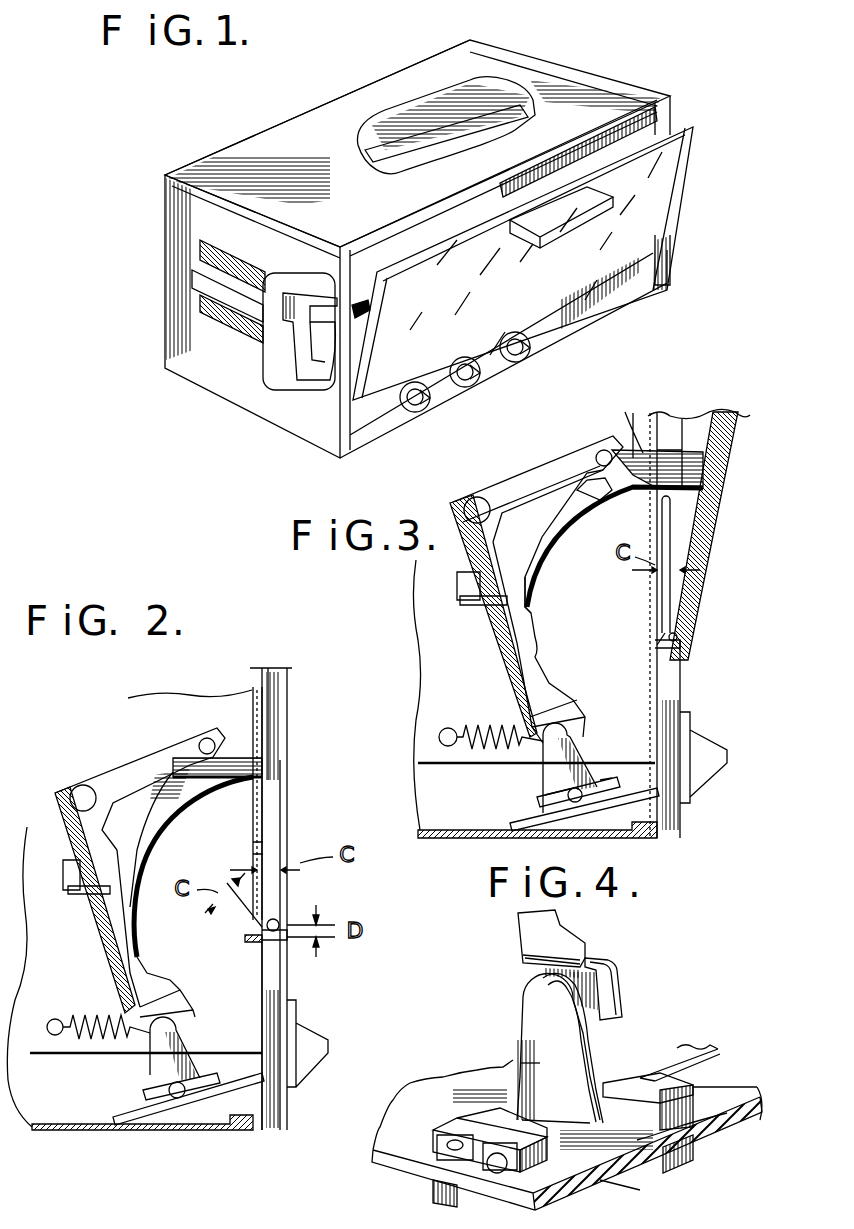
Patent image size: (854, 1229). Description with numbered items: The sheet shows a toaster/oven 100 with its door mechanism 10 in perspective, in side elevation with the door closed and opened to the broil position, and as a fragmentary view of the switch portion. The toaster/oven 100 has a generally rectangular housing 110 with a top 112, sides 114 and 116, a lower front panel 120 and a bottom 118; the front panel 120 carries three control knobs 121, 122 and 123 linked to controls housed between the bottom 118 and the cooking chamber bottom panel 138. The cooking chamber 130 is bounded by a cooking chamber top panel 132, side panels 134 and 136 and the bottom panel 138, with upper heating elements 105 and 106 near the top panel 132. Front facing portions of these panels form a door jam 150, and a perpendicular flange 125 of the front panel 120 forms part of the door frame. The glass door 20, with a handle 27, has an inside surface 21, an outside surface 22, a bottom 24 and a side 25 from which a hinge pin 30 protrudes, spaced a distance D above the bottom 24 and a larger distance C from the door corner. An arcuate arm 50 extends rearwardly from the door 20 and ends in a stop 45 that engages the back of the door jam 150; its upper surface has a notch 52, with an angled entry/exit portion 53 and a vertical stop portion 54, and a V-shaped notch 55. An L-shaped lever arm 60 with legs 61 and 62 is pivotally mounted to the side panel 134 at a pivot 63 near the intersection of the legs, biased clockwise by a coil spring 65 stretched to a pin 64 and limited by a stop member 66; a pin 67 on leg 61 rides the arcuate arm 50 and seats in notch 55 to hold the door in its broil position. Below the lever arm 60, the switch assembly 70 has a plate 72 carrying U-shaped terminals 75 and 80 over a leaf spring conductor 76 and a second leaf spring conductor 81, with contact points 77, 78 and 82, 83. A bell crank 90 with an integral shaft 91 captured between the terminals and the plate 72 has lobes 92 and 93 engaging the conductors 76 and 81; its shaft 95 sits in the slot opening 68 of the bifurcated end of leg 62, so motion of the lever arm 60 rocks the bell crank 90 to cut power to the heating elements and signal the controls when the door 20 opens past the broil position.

In FIG. 1, the toaster/oven 100 is at (158, 240).
In FIG. 1, the housing 110 is at (228, 152).
In FIG. 1, the top 112 is at (323, 205).
In FIG. 1, the side 114 is at (192, 363).
In FIG. 1, the side 116 is at (573, 68).
In FIG. 1, the lower front panel 120 is at (632, 290).
In FIG. 3, the lower front panel 120 is at (688, 818).
In FIG. 1, the knob 121 is at (426, 406).
In FIG. 1, the knob 122 is at (480, 380).
In FIG. 1, the knob 123 is at (530, 352).
In FIG. 1, the cooking chamber 130 is at (688, 112).
In FIG. 1, the cooking chamber top panel 132 is at (482, 103).
In FIG. 1, the cooking chamber side panel 134 is at (312, 285).
In FIG. 3, the cooking chamber side panel 134 is at (469, 672).
In FIG. 2, the cooking chamber side panel 134 is at (173, 712).
In FIG. 1, the cooking chamber side panel 136 is at (578, 163).
In FIG. 1, the cooking chamber bottom panel 138 is at (421, 242).
In FIG. 1, the upper heating element 105 is at (360, 138).
In FIG. 1, the upper heating element 106 is at (443, 152).
In FIG. 1, the handle 27 is at (586, 218).
In FIG. 1, the door 20 is at (690, 180).
In FIG. 2, the door 20 is at (290, 720).
In FIG. 1, the door mechanism 10 is at (386, 308).
In FIG. 2, the inside surface 21 is at (255, 813).
In FIG. 2, the outside surface 22 is at (290, 818).
In FIG. 2, the bottom 24 is at (290, 940).
In FIG. 2, the side 25 is at (280, 784).
In FIG. 3, the hinge pin 30 is at (680, 637).
In FIG. 2, the hinge pin 30 is at (280, 920).
In FIG. 3, the stop 45 is at (538, 607).
In FIG. 3, the arcuate arm 50 is at (585, 517).
In FIG. 2, the arcuate arm 50 is at (177, 813).
In FIG. 3, the notch 52 is at (633, 450).
In FIG. 3, the angled entry/exit portion 53 is at (630, 490).
In FIG. 3, the vertical stop portion 54 is at (668, 445).
In FIG. 3, the notch 55 is at (588, 470).
In FIG. 2, the notch 55 is at (170, 762).
In FIG. 3, the lever arm 60 is at (493, 477).
In FIG. 2, the lever arm 60 is at (100, 767).
In FIG. 3, the leg 61 is at (548, 471).
In FIG. 3, the leg 62 is at (519, 690).
In FIG. 3, the pivot 63 is at (464, 503).
In FIG. 3, the pin 64 is at (446, 728).
In FIG. 3, the coil spring 65 is at (478, 748).
In FIG. 3, the stop member 66 is at (468, 606).
In FIG. 2, the stop member 66 is at (82, 900).
In FIG. 3, the pin 67 is at (602, 450).
In FIG. 2, the pin 67 is at (200, 742).
In FIG. 3, the plate 72 is at (584, 804).
In FIG. 2, the plate 72 is at (232, 1090).
In FIG. 4, the plate 72 is at (430, 1097).
In FIG. 3, the bottom 118 is at (598, 838).
In FIG. 2, the perpendicular flange 125 is at (261, 941).
In FIG. 2, the door jam 150 is at (258, 847).
In FIG. 4, the switch assembly 70 is at (490, 1015).
In FIG. 4, the U-shaped terminal 75 is at (440, 1125).
In FIG. 4, the flexible leaf spring conductor 76 is at (505, 1122).
In FIG. 4, the contact point 77 is at (447, 1130).
In FIG. 4, the contact point 78 is at (440, 1160).
In FIG. 4, the U-shaped terminal 80 is at (630, 1077).
In FIG. 4, the second leaf spring conductor 81 is at (743, 1077).
In FIG. 4, the contact point 82 is at (695, 1138).
In FIG. 4, the contact point 83 is at (633, 1130).
In FIG. 4, the bell crank 90 is at (533, 1010).
In FIG. 4, the integral shaft 91 is at (508, 1166).
In FIG. 4, the lobe 92 is at (518, 1060).
In FIG. 4, the lobe 93 is at (580, 1063).
In FIG. 4, the shaft 95 is at (598, 992).
In FIG. 4, the slot opening 68 is at (598, 980).